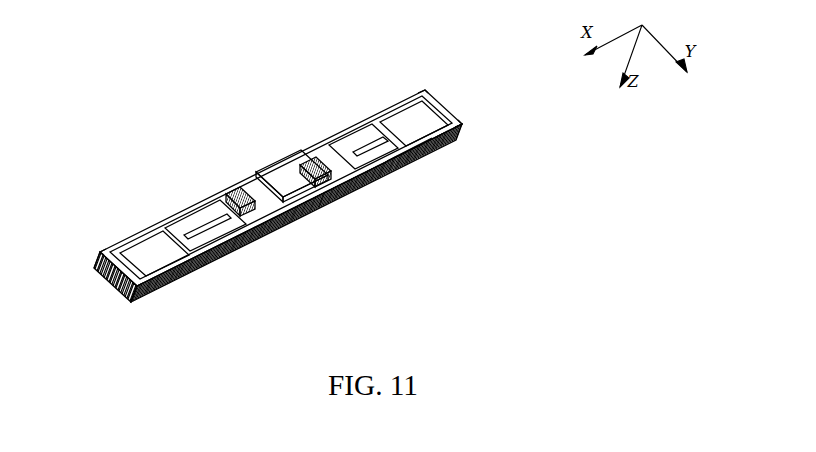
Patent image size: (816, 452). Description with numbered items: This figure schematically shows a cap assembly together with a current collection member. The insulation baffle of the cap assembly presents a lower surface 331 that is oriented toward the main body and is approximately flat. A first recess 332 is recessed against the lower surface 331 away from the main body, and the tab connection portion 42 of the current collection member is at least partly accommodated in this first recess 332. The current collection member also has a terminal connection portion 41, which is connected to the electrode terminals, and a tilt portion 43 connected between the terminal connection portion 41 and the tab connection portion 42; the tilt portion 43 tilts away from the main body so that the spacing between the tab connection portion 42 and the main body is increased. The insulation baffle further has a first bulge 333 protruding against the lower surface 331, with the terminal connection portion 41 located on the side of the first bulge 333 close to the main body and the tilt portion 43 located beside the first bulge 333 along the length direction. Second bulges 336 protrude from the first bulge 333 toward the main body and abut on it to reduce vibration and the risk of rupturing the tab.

The terminal connection portion 41 is at (143, 260).
The tab connection portion 42 is at (162, 230).
The tilt portion 43 is at (406, 158).
The lower surface 331 is at (258, 186).
The first recess 332 is at (228, 208).
The first bulge 333 is at (178, 280).
The second bulge 336 is at (112, 291).